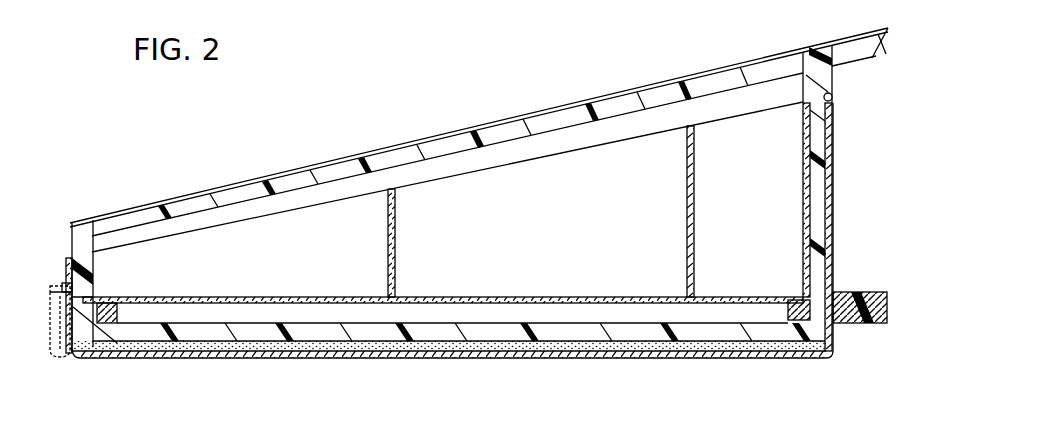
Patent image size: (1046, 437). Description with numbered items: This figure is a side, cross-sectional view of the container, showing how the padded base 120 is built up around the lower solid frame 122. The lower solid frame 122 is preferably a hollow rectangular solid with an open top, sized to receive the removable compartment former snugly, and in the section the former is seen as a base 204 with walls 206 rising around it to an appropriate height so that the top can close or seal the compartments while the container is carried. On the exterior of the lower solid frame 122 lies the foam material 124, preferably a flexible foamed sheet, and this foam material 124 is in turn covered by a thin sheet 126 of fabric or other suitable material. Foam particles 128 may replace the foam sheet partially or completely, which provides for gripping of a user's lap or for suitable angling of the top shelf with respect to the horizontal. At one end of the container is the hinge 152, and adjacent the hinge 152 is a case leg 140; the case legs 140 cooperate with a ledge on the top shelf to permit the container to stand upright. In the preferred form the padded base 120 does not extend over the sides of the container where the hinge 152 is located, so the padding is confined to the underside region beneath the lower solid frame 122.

The padded base 120 is at (163, 370).
The lower solid frame 122 is at (360, 331).
The foam material 124 is at (213, 360).
The thin sheet 126 is at (717, 352).
The foam particles 128 is at (293, 351).
The case legs 140 is at (865, 325).
The hinge 152 is at (831, 94).
The base 204 is at (460, 312).
The walls 206 is at (100, 266).